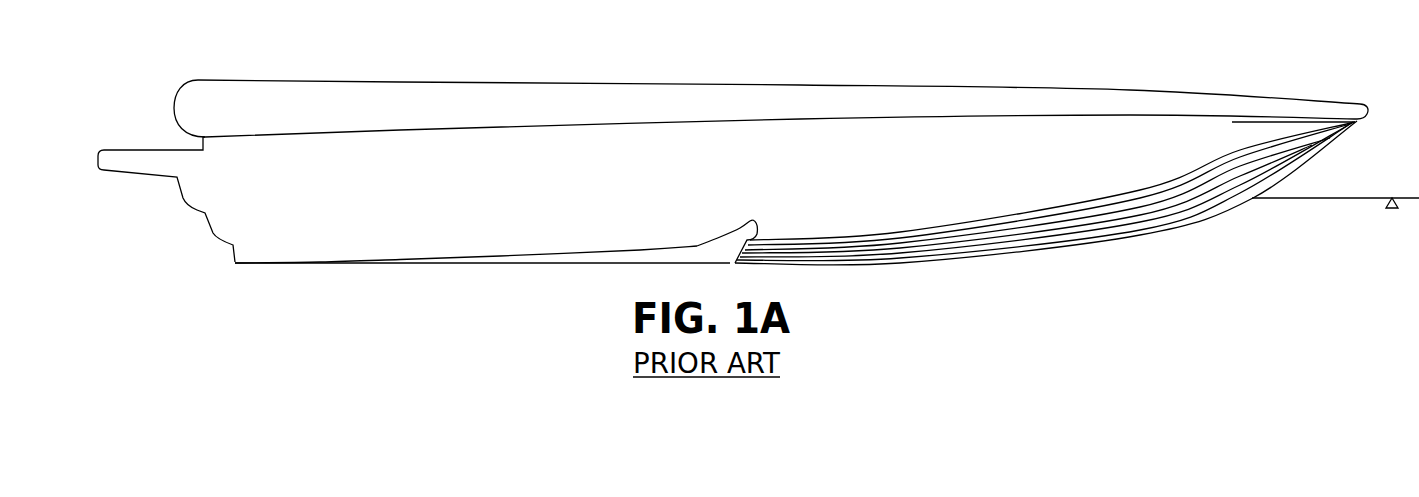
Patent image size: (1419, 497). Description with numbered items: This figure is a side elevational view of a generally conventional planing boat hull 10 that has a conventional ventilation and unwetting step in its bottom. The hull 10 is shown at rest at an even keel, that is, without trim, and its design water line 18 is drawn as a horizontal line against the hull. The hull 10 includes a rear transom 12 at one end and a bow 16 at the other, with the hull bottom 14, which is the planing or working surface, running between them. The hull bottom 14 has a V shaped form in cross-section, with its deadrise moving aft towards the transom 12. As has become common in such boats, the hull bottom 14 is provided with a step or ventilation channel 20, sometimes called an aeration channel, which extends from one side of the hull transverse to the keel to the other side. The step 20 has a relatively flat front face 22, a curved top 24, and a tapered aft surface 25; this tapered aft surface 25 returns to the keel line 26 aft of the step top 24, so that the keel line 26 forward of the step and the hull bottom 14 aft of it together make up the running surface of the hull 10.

The boat hull 10 is at (751, 179).
The rear transom 12 is at (197, 140).
The hull bottom 14 is at (1157, 225).
The bow 16 is at (1367, 100).
The design water line 18 is at (1350, 198).
The step or ventilation channel 20 is at (753, 230).
The front face 22 is at (760, 237).
The step top 24 is at (755, 220).
The tapered aft surface 25 is at (703, 245).
The keel line 26 is at (478, 265).